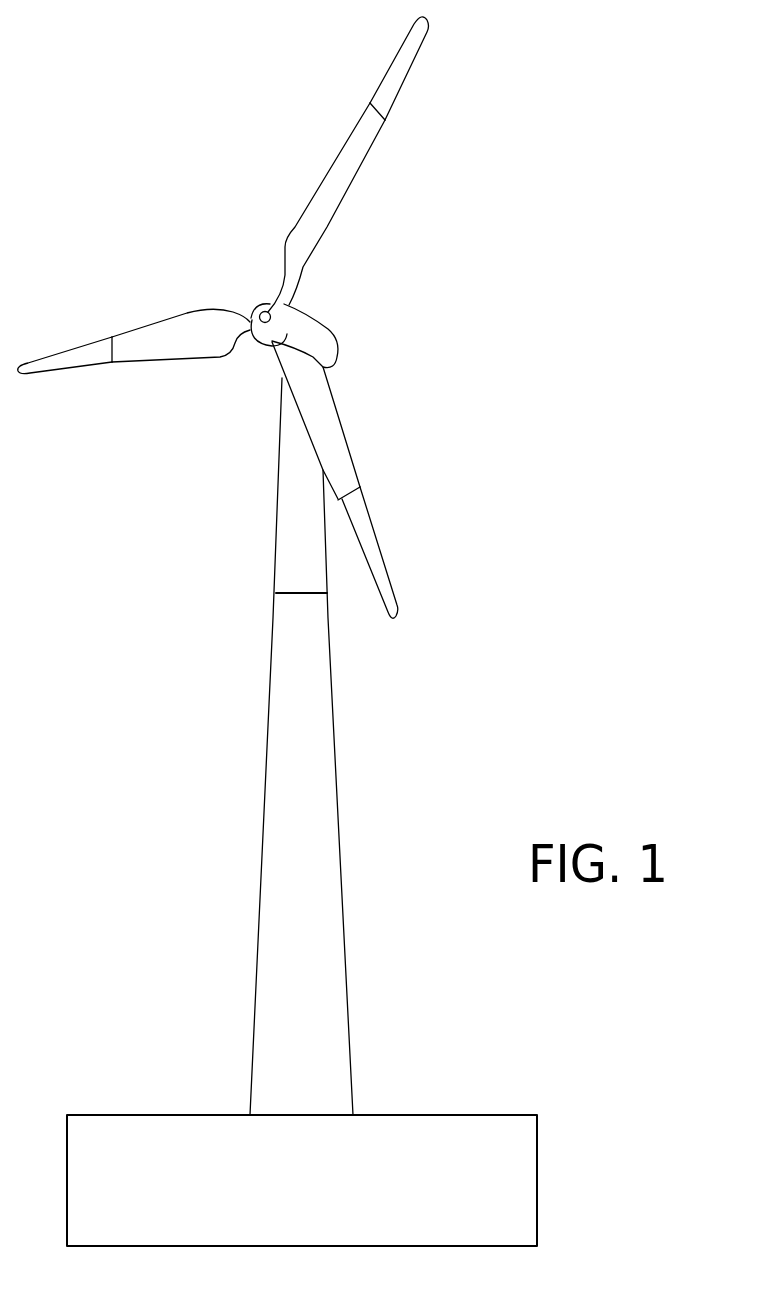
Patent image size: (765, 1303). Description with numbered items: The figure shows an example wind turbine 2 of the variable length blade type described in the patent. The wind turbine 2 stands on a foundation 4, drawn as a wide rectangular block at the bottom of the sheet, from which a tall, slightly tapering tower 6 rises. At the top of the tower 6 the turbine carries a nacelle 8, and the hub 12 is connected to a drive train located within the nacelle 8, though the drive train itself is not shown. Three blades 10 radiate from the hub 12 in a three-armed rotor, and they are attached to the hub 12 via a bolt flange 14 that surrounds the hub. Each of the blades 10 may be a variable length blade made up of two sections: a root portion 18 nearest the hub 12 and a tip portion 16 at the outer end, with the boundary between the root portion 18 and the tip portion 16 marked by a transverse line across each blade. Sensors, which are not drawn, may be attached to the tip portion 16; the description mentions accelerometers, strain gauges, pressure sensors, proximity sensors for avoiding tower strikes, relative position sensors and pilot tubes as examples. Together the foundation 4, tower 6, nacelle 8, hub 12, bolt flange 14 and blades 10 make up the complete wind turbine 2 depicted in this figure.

The wind turbine 2 is at (149, 500).
The foundation 4 is at (483, 1130).
The tower 6 is at (290, 567).
The nacelle 8 is at (332, 328).
The blades 10 is at (253, 316).
The hub 12 is at (256, 305).
The bolt flange 14 is at (247, 318).
The tip portion 16 is at (397, 72).
The root portion 18 is at (347, 150).